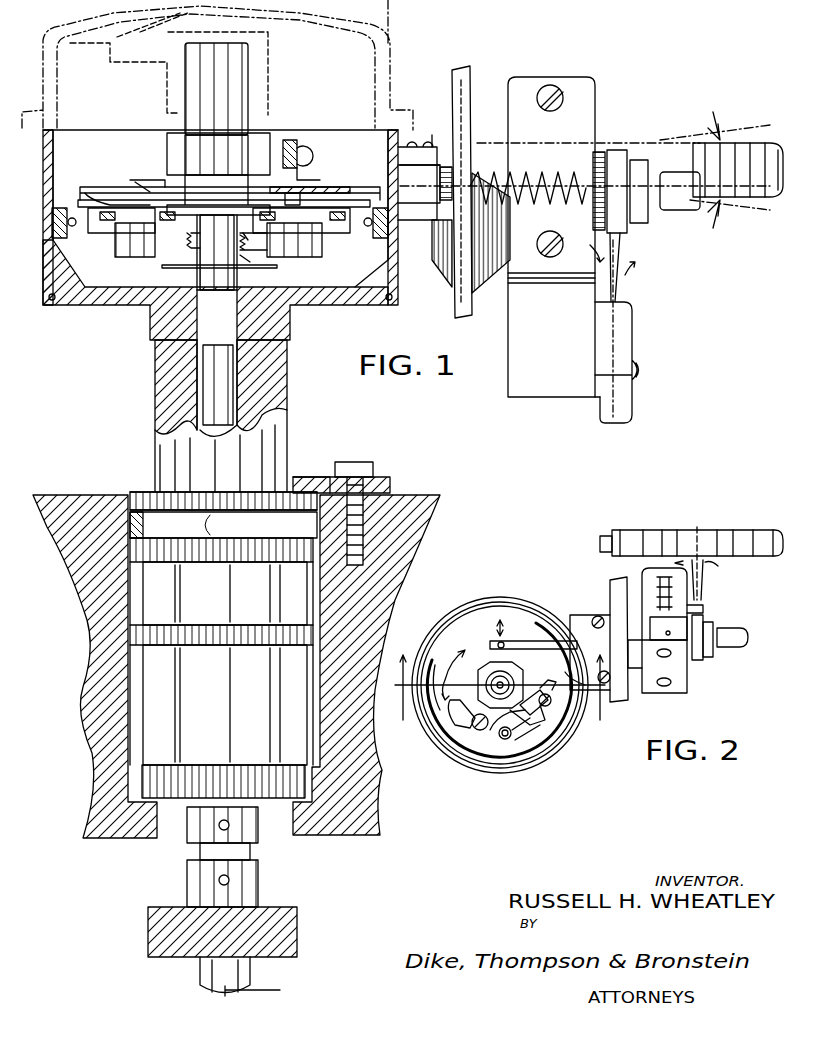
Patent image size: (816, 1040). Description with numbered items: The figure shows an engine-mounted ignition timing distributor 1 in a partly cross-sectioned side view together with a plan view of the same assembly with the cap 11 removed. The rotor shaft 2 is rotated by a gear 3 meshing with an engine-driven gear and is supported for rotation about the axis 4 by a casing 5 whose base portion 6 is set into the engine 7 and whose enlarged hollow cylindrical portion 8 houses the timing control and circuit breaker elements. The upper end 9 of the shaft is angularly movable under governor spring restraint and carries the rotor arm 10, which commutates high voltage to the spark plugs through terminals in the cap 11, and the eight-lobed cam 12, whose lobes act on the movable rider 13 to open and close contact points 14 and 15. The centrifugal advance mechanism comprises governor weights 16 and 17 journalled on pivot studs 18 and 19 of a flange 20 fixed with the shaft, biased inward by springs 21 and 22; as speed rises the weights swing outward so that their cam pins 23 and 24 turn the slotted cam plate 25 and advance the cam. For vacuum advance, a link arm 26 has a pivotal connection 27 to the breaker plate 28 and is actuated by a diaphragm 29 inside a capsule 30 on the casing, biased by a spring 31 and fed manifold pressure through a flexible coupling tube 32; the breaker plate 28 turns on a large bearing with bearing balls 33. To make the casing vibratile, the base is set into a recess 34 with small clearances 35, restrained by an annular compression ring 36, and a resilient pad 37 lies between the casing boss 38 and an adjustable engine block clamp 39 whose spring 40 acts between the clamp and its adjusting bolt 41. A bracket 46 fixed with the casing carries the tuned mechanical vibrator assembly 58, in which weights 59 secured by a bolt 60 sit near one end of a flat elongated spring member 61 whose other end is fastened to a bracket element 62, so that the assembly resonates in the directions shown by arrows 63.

In FIG. 1, the distributor 1 is at (95, 388).
In FIG. 2, the distributor 1 is at (497, 789).
In FIG. 1, the rotor shaft 2 is at (165, 442).
In FIG. 1, the gear 3 is at (285, 905).
In FIG. 1, the axis 4 is at (259, 991).
In FIG. 1, the casing 5 is at (155, 420).
In FIG. 1, the base portion 6 is at (170, 600).
In FIG. 1, the engine 7 is at (92, 730).
In FIG. 1, the enlarged hollow cylindrical portion 8 is at (43, 240).
In FIG. 2, the enlarged hollow cylindrical portion 8 is at (470, 598).
In FIG. 1, the upper end 9 is at (250, 80).
In FIG. 1, the rotor arm 10 is at (150, 70).
In FIG. 1, the cap 11 is at (393, 47).
In FIG. 1, the cam 12 is at (170, 138).
In FIG. 2, the cam 12 is at (490, 665).
In FIG. 2, the movable rider 13 is at (505, 755).
In FIG. 1, the contact point 14 is at (290, 140).
In FIG. 2, the contact point 14 is at (545, 688).
In FIG. 1, the contact point 15 is at (305, 144).
In FIG. 2, the contact point 15 is at (575, 722).
In FIG. 1, the governor weight 16 is at (140, 255).
In FIG. 1, the governor weight 17 is at (300, 257).
In FIG. 1, the pivot stud 18 is at (185, 242).
In FIG. 1, the pivot stud 19 is at (255, 245).
In FIG. 1, the flange 20 is at (275, 268).
In FIG. 1, the spring 21 is at (195, 268).
In FIG. 1, the spring 22 is at (250, 260).
In FIG. 1, the cam pin 23 is at (110, 203).
In FIG. 1, the cam pin 24 is at (300, 198).
In FIG. 1, the cam plate 25 is at (100, 233).
In FIG. 1, the link arm 26 is at (160, 185).
In FIG. 2, the link arm 26 is at (525, 643).
In FIG. 1, the pivotal connection 27 is at (145, 182).
In FIG. 1, the breaker plate 28 is at (120, 190).
In FIG. 2, the breaker plate 28 is at (465, 745).
In FIG. 1, the diaphragm 29 is at (450, 98).
In FIG. 1, the capsule 30 is at (475, 95).
In FIG. 2, the capsule 30 is at (608, 600).
In FIG. 1, the spring 31 is at (530, 180).
In FIG. 1, the coupling tube 32 is at (682, 210).
In FIG. 2, the coupling tube 32 is at (738, 644).
In FIG. 1, the bearing balls 33 is at (52, 222).
In FIG. 1, the recess 34 is at (145, 738).
In FIG. 1, the clearances 35 is at (128, 556).
In FIG. 1, the annular compression ring 36 is at (128, 525).
In FIG. 1, the resilient pad 37 is at (290, 500).
In FIG. 1, the casing boss 38 is at (280, 492).
In FIG. 1, the engine block clamp 39 is at (390, 486).
In FIG. 1, the spring 40 is at (390, 480).
In FIG. 1, the adjusting bolt 41 is at (365, 462).
In FIG. 1, the bracket 46 is at (562, 330).
In FIG. 2, the bracket 46 is at (690, 685).
In FIG. 1, the mechanical vibrator assembly 58 is at (672, 62).
In FIG. 2, the mechanical vibrator assembly 58 is at (628, 503).
In FIG. 1, the weights 59 is at (723, 170).
In FIG. 2, the weights 59 is at (715, 530).
In FIG. 2, the bolt 60 is at (598, 542).
In FIG. 1, the flat elongated spring member 61 is at (615, 148).
In FIG. 2, the flat elongated spring member 61 is at (705, 585).
In FIG. 1, the bracket element 62 is at (604, 415).
In FIG. 2, the bracket element 62 is at (703, 612).
In FIG. 1, the arrows 63 is at (613, 261).
In FIG. 2, the arrows 63 is at (720, 566).